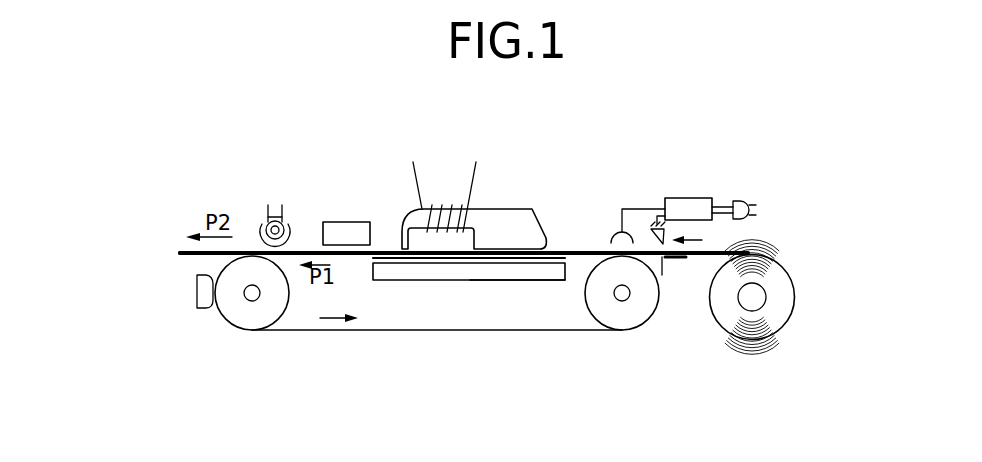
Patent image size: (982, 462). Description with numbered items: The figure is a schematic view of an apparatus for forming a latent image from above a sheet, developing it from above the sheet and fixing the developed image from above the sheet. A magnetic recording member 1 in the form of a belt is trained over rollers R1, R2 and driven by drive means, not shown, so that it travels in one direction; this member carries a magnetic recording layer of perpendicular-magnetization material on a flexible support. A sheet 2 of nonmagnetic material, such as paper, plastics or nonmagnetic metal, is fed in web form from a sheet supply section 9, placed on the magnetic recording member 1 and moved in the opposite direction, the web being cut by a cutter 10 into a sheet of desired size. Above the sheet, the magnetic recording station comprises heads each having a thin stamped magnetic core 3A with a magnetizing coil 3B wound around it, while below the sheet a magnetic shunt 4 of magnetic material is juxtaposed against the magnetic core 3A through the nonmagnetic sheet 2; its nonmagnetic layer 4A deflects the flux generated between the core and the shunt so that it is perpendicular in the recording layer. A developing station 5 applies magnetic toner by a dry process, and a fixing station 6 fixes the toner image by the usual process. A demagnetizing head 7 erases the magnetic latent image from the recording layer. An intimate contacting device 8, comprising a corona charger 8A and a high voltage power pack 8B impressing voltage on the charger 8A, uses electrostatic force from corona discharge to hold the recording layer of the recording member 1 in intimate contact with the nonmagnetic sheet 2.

The magnetic recording member 1 is at (445, 331).
The sheet of nonmagnetic material 2 is at (182, 256).
The magnetic core 3A is at (527, 209).
The magnetizing coil 3B is at (476, 177).
The magnetic shunt 4 is at (438, 289).
The nonmagnetic layer 4A is at (518, 266).
The developing station 5 is at (347, 222).
The fixing station 6 is at (285, 217).
The demagnetizing head 7 is at (204, 310).
The intimate contacting device 8 is at (657, 185).
The corona charger 8A is at (612, 238).
The high voltage power pack 8B is at (692, 198).
The sheet supply section 9 is at (783, 320).
The cutter 10 is at (667, 262).
The roller R1 is at (642, 320).
The roller R2 is at (252, 331).